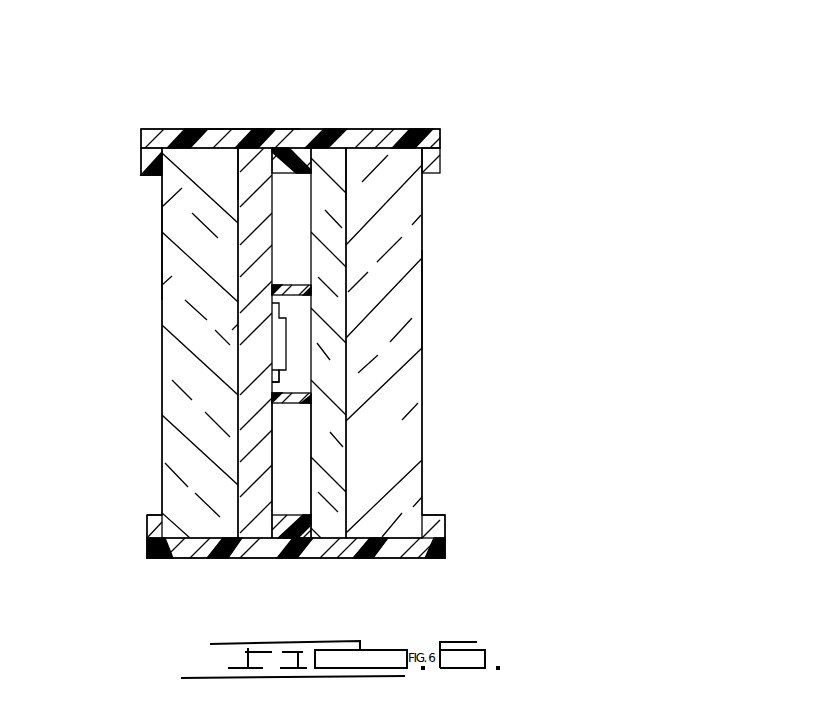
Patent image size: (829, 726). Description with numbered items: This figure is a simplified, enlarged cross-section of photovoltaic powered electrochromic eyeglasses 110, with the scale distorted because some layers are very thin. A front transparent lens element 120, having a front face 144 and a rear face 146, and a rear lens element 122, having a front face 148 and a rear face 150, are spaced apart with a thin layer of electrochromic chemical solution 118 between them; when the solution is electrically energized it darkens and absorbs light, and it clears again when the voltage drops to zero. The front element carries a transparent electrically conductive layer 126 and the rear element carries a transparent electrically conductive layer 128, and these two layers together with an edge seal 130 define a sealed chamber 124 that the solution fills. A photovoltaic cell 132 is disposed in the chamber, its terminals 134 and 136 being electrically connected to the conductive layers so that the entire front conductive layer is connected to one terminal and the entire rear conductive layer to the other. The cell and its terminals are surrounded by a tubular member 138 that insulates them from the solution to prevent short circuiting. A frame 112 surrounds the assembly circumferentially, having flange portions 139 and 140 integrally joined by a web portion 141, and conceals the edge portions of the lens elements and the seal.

The eyeglasses 110 is at (170, 126).
The frame 112 is at (423, 138).
The electrochromic chemical solution 118 is at (297, 500).
The front lens element 120 is at (182, 478).
The rear lens element 122 is at (412, 482).
The sealed chamber 124 is at (278, 480).
The transparent electrically conductive layer 126 is at (262, 520).
The transparent electrically conductive layer 128 is at (337, 523).
The edge seal 130 is at (290, 165).
The photovoltaic cell 132 is at (279, 347).
The terminal 134 is at (272, 303).
The terminal 136 is at (279, 378).
The tubular member 138 is at (297, 403).
The flange portion 139 is at (143, 147).
The flange portion 140 is at (440, 180).
The web portion 141 is at (268, 128).
The front face 144 is at (163, 245).
The rear face 146 is at (247, 128).
The front face 148 is at (340, 170).
The rear face 150 is at (422, 300).